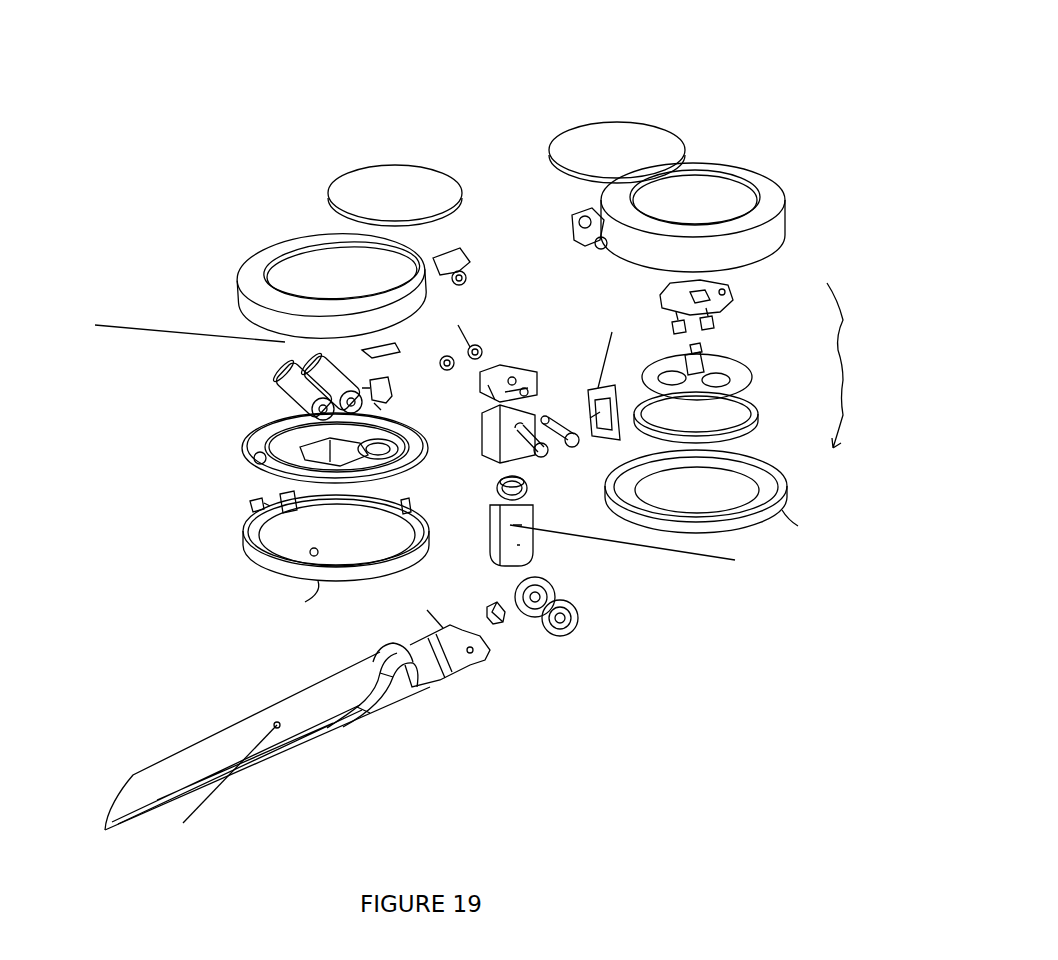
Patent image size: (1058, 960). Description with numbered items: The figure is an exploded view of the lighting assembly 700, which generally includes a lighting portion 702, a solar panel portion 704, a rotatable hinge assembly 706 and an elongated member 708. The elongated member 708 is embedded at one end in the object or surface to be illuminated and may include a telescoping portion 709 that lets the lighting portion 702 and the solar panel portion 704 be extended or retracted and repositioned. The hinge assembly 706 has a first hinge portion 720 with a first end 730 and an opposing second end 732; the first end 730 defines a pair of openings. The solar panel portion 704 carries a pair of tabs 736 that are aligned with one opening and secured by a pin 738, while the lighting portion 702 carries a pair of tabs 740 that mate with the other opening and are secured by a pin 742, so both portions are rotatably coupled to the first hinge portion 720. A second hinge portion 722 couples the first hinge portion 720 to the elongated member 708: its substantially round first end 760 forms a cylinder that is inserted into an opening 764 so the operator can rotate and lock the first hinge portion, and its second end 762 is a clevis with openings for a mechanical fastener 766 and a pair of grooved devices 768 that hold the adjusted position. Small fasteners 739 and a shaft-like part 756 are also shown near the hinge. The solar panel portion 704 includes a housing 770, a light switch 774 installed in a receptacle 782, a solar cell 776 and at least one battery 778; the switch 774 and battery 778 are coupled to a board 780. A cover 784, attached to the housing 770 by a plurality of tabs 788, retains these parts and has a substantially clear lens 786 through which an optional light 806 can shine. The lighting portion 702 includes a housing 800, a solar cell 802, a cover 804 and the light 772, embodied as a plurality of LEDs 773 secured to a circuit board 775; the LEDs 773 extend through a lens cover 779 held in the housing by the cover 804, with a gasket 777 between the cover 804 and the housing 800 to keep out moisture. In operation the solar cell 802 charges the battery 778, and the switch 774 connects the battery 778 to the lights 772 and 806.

The lighting assembly 700 is at (753, 44).
The lighting portion 702 is at (654, 80).
The solar panel portion 704 is at (360, 90).
The rotatable hinge assembly 706 is at (519, 244).
The elongated member 708 is at (297, 735).
The telescoping portion 709 is at (437, 680).
The first hinge portion 720 is at (482, 443).
The second hinge portion 722 is at (490, 518).
The first end 730 is at (498, 373).
The second end 732 is at (500, 450).
The tabs 736 is at (448, 258).
The pin 738 is at (543, 470).
The fastener 739 is at (464, 388).
The tabs 740 is at (579, 220).
The pin 742 is at (557, 422).
The shaft 756 is at (527, 372).
The first end 760 is at (497, 477).
The second end 762 is at (498, 556).
The openings 764 is at (472, 660).
The mechanical fastener 766 is at (503, 622).
The grooved devices 768 is at (578, 615).
The housing 770 is at (250, 262).
The light 772 is at (770, 365).
The LEDs 773 is at (733, 330).
The light switch 774 is at (290, 400).
The circuit board 775 is at (727, 295).
The solar cell 776 is at (332, 190).
The gasket 777 is at (707, 427).
The battery 778 is at (280, 380).
The lens cover 779 is at (737, 382).
The board 780 is at (245, 455).
The receptacle 782 is at (245, 433).
The cover 784 is at (336, 560).
The clear lens 786 is at (262, 573).
The tabs 788 is at (250, 508).
The housing 800 is at (773, 195).
The solar cell 802 is at (660, 147).
The cover 804 is at (777, 492).
The light 806 is at (250, 468).